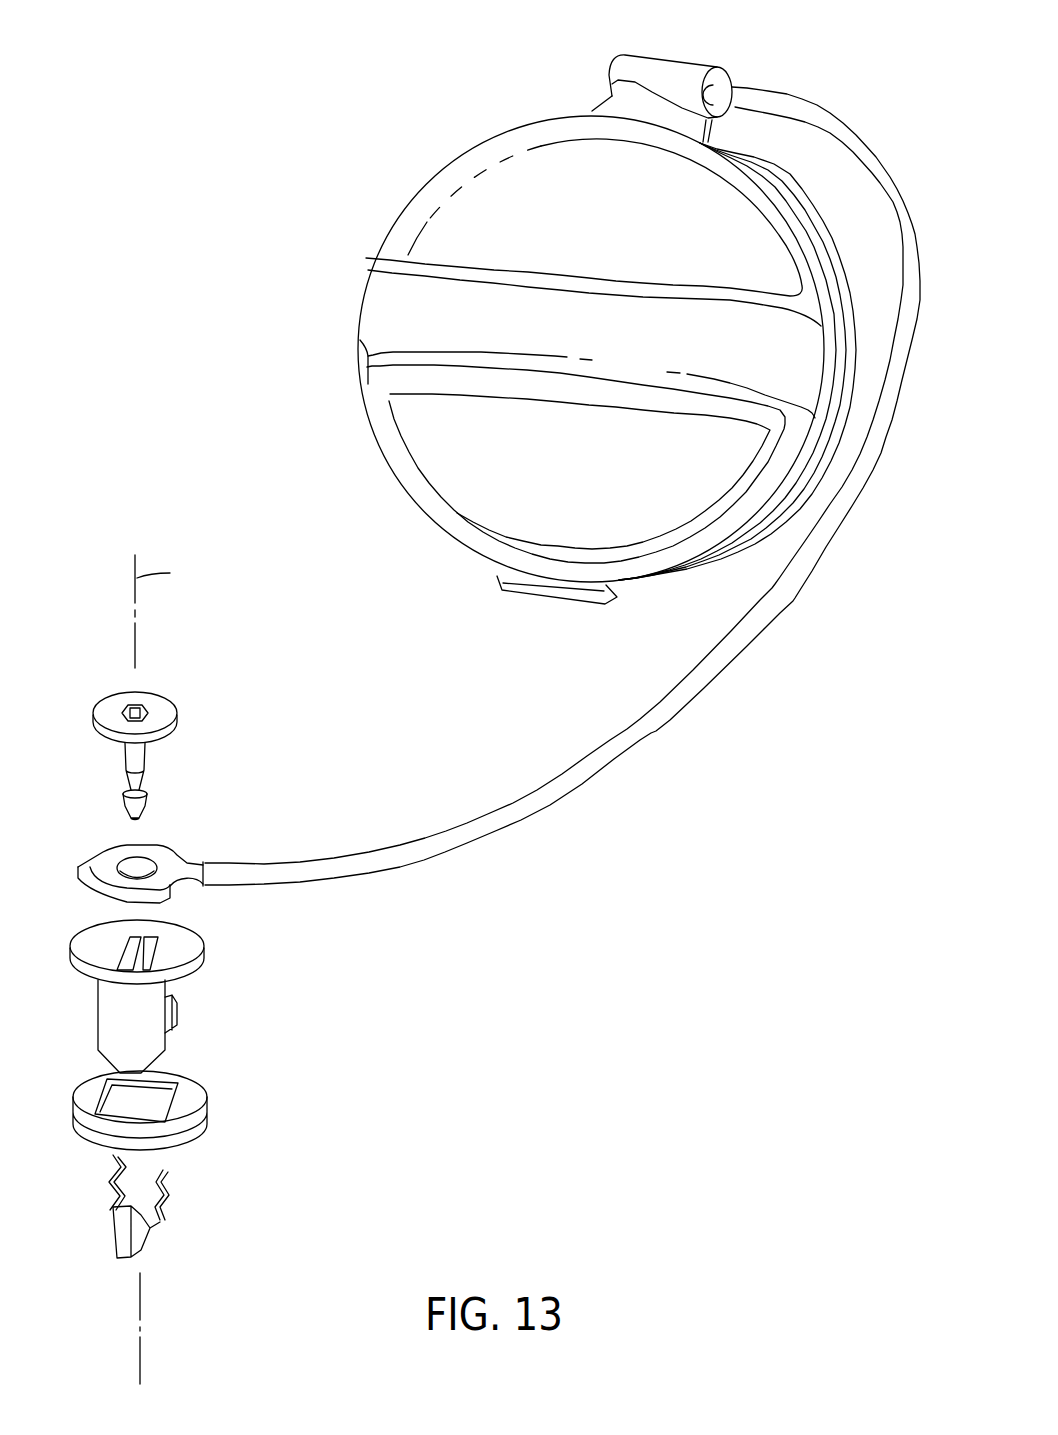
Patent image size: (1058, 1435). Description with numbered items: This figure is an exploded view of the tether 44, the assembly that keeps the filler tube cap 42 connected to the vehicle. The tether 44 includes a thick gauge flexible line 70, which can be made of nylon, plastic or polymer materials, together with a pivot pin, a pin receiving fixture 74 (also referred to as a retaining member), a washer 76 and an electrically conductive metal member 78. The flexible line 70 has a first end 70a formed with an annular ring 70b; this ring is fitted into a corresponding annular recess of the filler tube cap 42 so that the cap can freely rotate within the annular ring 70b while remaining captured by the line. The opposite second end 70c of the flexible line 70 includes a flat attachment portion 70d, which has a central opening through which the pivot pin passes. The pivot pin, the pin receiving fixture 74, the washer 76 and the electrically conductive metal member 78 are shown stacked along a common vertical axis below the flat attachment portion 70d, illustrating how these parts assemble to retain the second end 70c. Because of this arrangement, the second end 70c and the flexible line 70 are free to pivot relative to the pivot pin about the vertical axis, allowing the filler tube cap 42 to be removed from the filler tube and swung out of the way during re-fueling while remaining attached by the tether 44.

The tether 44 is at (163, 160).
The filler tube cap 42 is at (493, 207).
The thick gauge flexible line 70 is at (845, 123).
The first end 70a is at (679, 78).
The annular ring 70b is at (738, 545).
The second end 70c is at (196, 866).
The flat attachment portion 70d is at (112, 858).
The pin receiving fixture 74 is at (102, 947).
The washer 76 is at (187, 1098).
The electrically conductive metal member 78 is at (160, 1213).